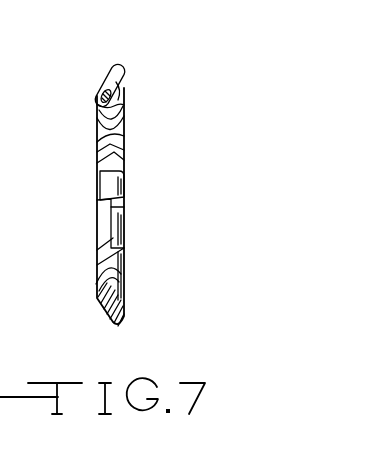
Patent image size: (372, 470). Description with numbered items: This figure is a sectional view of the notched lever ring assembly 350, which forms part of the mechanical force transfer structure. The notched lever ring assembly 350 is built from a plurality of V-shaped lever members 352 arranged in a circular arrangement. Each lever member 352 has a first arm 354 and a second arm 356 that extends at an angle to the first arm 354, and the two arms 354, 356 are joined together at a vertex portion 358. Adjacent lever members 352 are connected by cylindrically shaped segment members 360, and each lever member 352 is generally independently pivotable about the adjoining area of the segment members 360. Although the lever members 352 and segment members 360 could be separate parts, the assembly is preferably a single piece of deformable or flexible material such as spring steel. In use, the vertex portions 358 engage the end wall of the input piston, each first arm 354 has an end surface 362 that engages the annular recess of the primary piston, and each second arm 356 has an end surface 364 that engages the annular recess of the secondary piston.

The notched lever ring assembly 350 is at (148, 81).
The lever member 352 is at (82, 152).
The first arm 354 is at (112, 70).
The second arm 356 is at (97, 118).
The vertex portion 358 is at (97, 97).
The segment member 360 is at (93, 157).
The end surface 362 is at (125, 73).
The end surface 364 is at (73, 169).